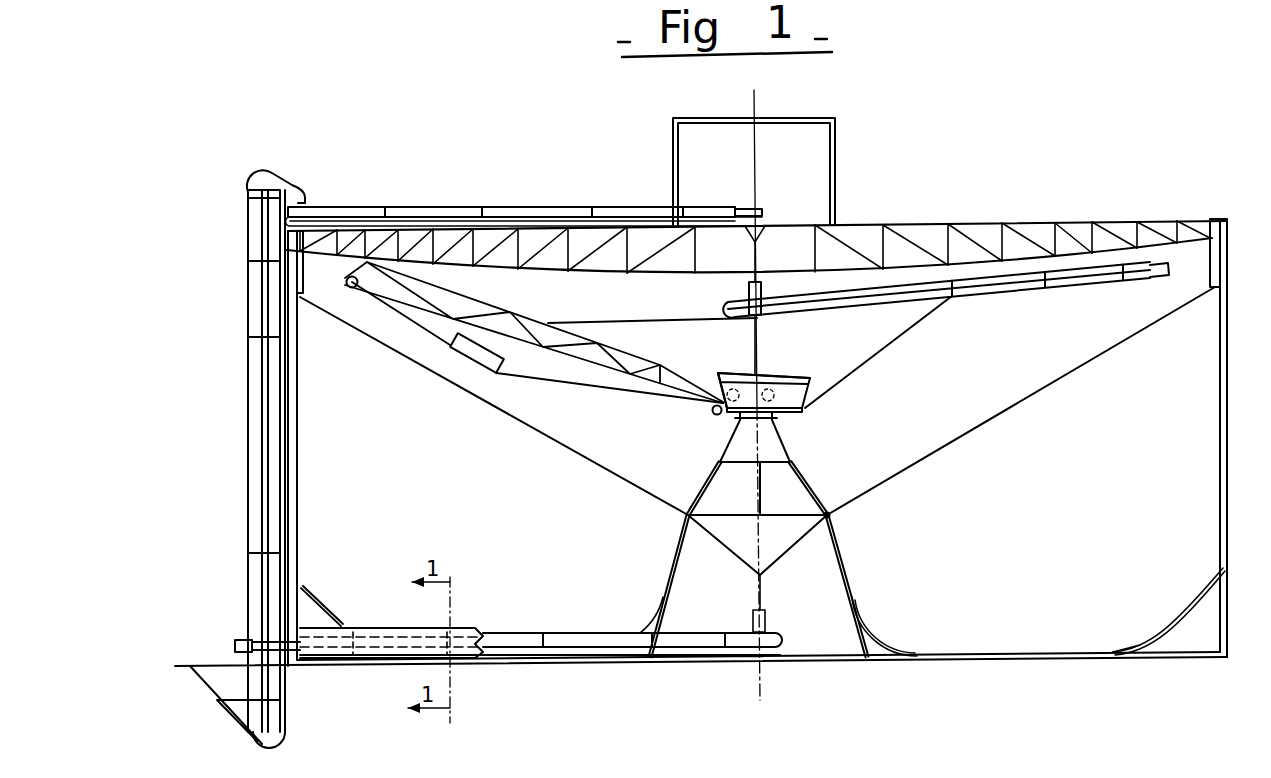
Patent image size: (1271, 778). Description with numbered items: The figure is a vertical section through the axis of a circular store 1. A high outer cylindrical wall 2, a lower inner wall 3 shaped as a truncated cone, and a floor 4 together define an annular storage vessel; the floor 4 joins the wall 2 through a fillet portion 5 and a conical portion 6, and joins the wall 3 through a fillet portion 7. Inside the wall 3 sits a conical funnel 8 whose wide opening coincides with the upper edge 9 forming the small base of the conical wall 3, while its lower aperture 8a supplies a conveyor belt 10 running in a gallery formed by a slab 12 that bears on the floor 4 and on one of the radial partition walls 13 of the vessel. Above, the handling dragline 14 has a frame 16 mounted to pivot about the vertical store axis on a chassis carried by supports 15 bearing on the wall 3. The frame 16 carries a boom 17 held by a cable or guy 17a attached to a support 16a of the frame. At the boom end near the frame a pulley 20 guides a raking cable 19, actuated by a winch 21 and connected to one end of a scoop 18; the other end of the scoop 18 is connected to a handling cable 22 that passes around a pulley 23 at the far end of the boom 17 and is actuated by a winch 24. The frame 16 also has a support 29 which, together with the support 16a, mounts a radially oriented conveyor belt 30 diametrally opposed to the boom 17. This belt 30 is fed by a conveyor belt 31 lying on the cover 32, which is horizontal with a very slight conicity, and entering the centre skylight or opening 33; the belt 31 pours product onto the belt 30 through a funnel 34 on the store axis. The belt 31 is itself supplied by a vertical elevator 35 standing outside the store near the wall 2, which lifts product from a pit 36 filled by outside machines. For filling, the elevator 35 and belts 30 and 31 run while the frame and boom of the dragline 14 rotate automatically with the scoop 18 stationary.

The store 1 is at (940, 405).
The outer cylindrical wall 2 is at (1228, 336).
The lower inner wall 3 is at (676, 552).
The floor 4 is at (1062, 658).
The fillet portion 5 is at (1138, 645).
The conical portion 6 is at (1202, 598).
The fillet portion 7 is at (893, 640).
The conical funnel 8 is at (786, 552).
The lower aperture 8a is at (763, 582).
The upper edge 9 is at (830, 509).
The conveyor belt 10 is at (236, 645).
The slab 12 is at (404, 630).
The radial partition wall 13 is at (604, 470).
The handling dragline 14 is at (791, 376).
The supports 15 is at (706, 480).
The frame 16 is at (786, 414).
The support 16a is at (760, 332).
The boom 17 is at (520, 314).
The cable or guy 17a is at (614, 322).
The scoop 18 is at (496, 372).
The raking cable 19 is at (570, 383).
The pulley 20 is at (712, 412).
The winch 21 is at (768, 388).
The handling cable 22 is at (420, 328).
The pulley 23 is at (349, 288).
The winch 24 is at (724, 387).
The support 29 is at (912, 335).
The conveyor belt 30 is at (1066, 292).
The conveyor belt 31 is at (458, 208).
The cover 32 is at (968, 225).
The centre skylight or opening 33 is at (835, 180).
The funnel 34 is at (763, 226).
The vertical elevator 35 is at (253, 324).
The pit 36 is at (215, 692).